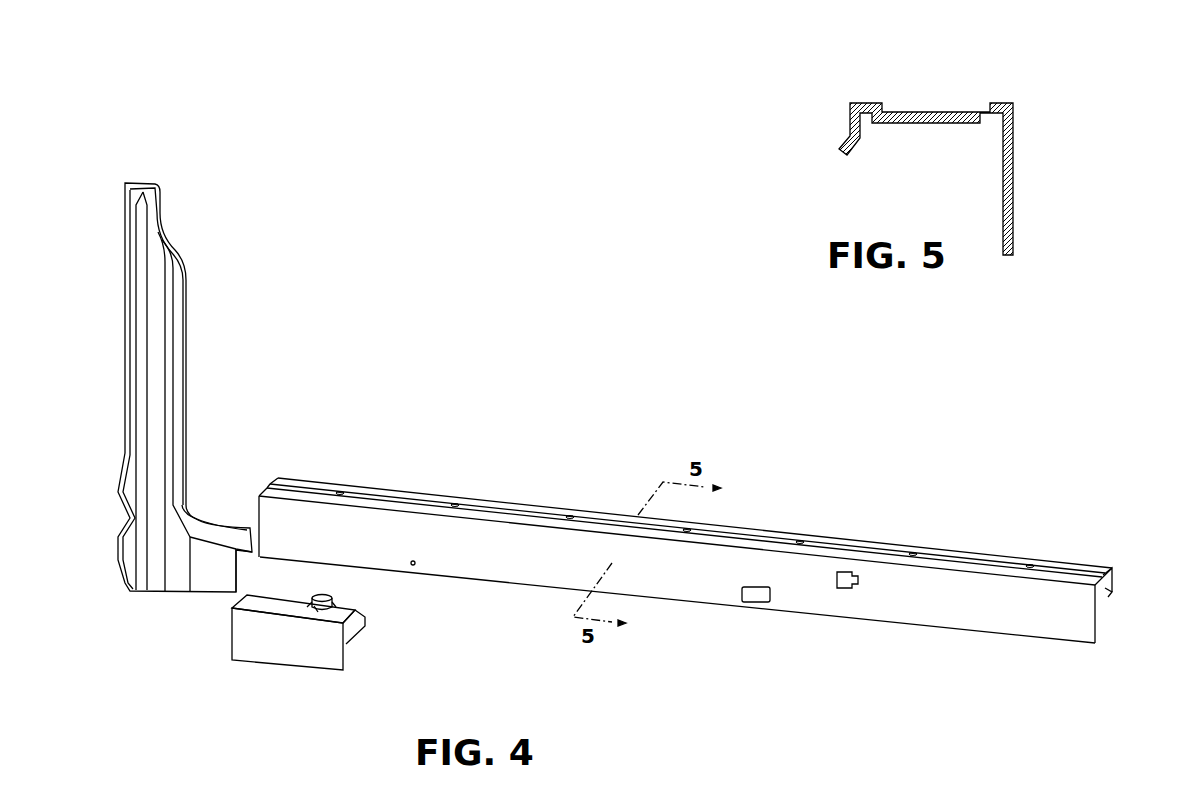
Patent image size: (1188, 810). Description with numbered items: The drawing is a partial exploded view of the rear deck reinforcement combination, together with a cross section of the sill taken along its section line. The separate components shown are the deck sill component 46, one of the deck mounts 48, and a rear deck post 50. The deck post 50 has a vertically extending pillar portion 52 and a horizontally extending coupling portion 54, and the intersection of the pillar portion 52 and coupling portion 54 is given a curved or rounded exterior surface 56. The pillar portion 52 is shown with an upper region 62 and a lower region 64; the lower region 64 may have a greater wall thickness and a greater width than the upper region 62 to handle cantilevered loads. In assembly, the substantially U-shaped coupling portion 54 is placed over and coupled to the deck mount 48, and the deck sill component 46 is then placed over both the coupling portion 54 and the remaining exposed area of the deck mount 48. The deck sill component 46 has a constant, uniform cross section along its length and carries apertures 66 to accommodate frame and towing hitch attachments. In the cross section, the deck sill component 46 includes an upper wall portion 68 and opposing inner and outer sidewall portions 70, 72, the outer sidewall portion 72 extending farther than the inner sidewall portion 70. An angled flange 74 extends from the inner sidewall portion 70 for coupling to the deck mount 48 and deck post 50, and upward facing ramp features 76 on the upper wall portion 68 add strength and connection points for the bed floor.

In FIG. 4, the deck sill component 46 is at (563, 480).
In FIG. 5, the deck sill component 46 is at (1072, 127).
In FIG. 4, the deck mount 48 is at (280, 685).
In FIG. 4, the deck post 50 is at (256, 240).
In FIG. 4, the pillar portion 52 is at (218, 354).
In FIG. 4, the coupling portion 54 is at (234, 494).
In FIG. 4, the curved exterior surface 56 is at (187, 517).
In FIG. 4, the upper region 62 is at (103, 185).
In FIG. 4, the lower region 64 is at (103, 390).
In FIG. 4, the apertures 66 is at (848, 589).
In FIG. 4, the upper wall portion 68 is at (840, 548).
In FIG. 5, the upper wall portion 68 is at (928, 112).
In FIG. 4, the inner sidewall portion 70 is at (1114, 572).
In FIG. 5, the inner sidewall portion 70 is at (850, 127).
In FIG. 4, the outer sidewall portion 72 is at (927, 610).
In FIG. 5, the outer sidewall portion 72 is at (1012, 193).
In FIG. 4, the angled flange 74 is at (1112, 593).
In FIG. 5, the angled flange 74 is at (855, 148).
In FIG. 5, the ramp features 76 is at (865, 103).